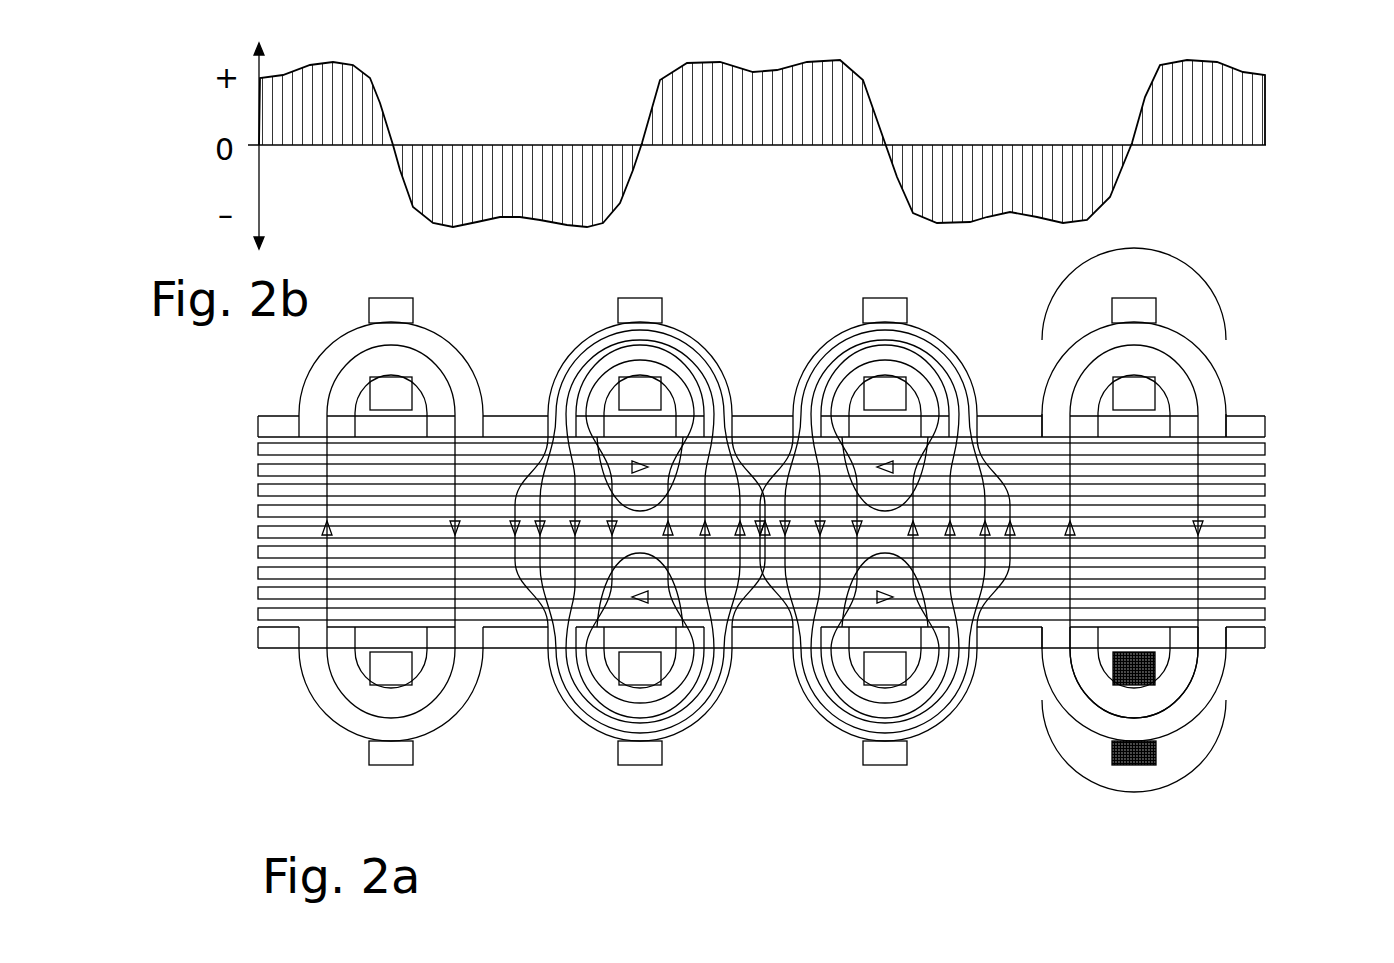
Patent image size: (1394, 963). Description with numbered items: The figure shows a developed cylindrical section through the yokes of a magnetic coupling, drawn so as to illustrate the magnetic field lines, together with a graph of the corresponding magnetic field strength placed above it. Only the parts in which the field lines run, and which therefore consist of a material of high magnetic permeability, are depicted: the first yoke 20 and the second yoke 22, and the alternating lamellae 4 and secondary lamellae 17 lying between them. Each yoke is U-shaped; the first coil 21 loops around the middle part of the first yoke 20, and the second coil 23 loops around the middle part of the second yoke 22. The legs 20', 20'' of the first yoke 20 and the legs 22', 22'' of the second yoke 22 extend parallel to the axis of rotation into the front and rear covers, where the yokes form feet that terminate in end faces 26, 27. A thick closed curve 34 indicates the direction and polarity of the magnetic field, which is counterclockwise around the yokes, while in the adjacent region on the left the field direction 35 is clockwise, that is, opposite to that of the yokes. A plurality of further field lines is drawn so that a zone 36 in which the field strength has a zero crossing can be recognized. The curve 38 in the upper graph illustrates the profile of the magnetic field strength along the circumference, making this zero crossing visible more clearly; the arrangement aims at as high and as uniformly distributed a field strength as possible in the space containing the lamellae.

In FIG. 2a, the lamellae 4 is at (268, 614).
In FIG. 2a, the secondary lamellae 17 is at (268, 595).
In FIG. 2a, the first yoke 20 is at (1201, 391).
In FIG. 2a, the leg of first yoke 20' is at (1205, 377).
In FIG. 2a, the leg of first yoke 20'' is at (1209, 471).
In FIG. 2a, the first coil 21 is at (1128, 307).
In FIG. 2a, the second yoke 22 is at (1201, 709).
In FIG. 2a, the leg of second yoke 22' is at (1204, 684).
In FIG. 2a, the leg of second yoke 22'' is at (1087, 746).
In FIG. 2a, the second coil 23 is at (1153, 752).
In FIG. 2a, the end face 26 is at (1205, 433).
In FIG. 2a, the end face 27 is at (1240, 615).
In FIG. 2a, the closed curve 34 is at (1094, 710).
In FIG. 2a, the field direction 35 is at (925, 710).
In FIG. 2a, the zone 36 is at (837, 653).
In FIG. 2b, the curve 38 is at (1142, 103).